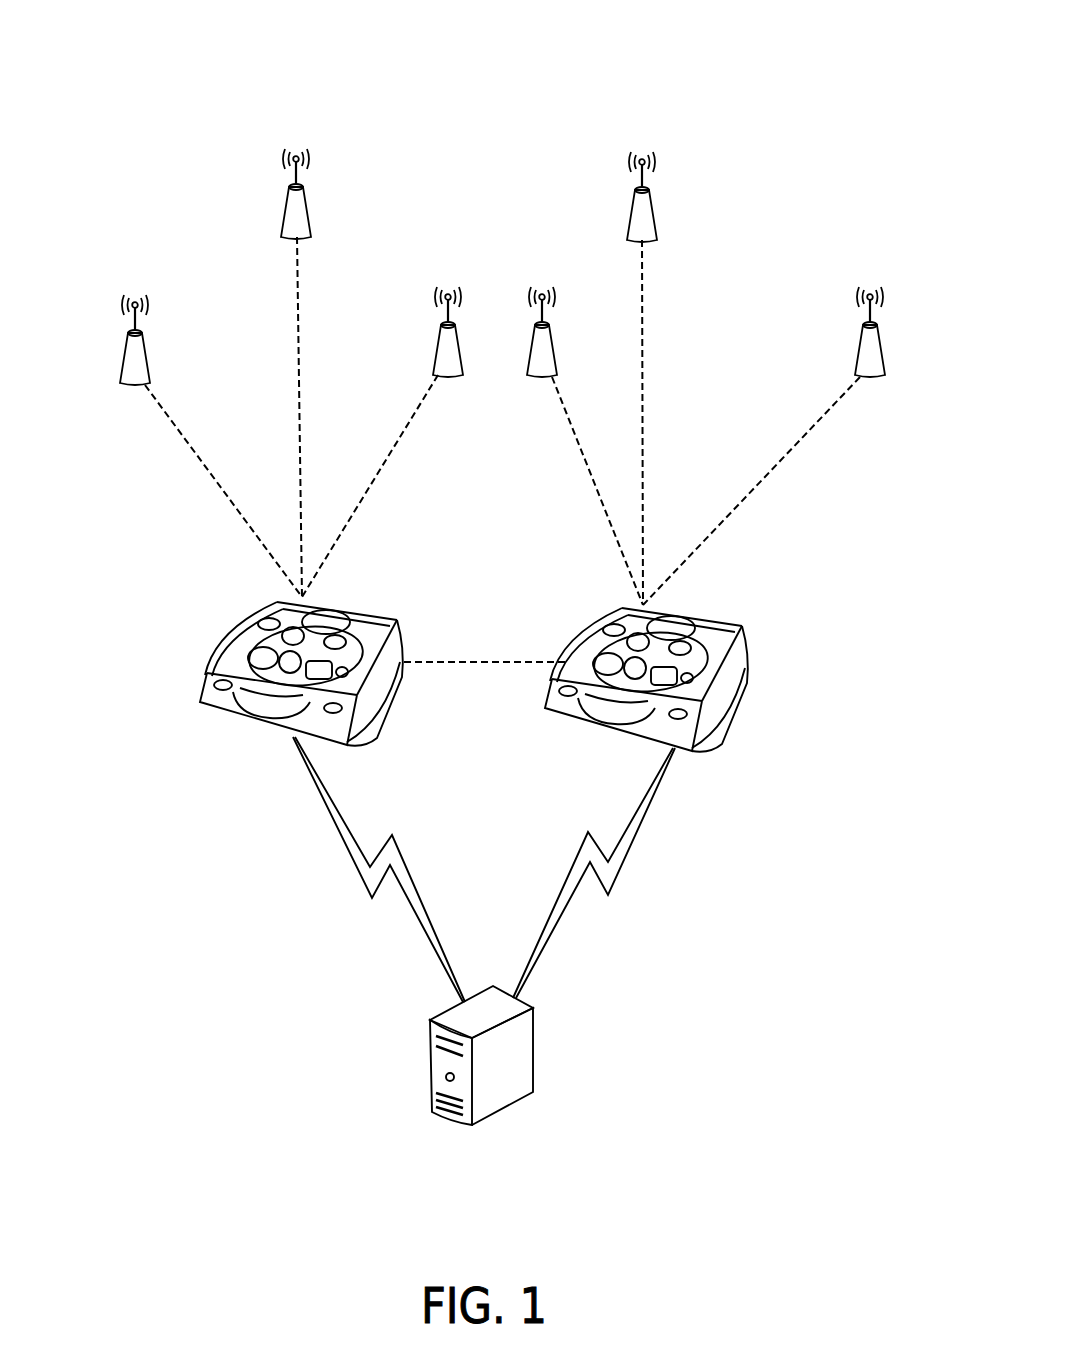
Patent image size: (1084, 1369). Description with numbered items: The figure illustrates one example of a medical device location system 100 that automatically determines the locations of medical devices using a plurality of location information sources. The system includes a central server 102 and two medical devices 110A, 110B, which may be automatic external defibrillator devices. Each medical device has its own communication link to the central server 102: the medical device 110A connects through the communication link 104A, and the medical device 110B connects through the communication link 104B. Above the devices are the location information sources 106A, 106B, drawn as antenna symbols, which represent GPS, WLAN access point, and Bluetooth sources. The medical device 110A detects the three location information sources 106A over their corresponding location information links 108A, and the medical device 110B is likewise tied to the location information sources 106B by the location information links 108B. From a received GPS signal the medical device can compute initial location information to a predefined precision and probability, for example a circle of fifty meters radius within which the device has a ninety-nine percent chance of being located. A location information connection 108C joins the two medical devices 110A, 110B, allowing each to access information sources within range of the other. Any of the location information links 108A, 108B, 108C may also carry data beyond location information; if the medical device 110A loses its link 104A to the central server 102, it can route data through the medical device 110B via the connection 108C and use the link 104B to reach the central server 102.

The medical device location system 100 is at (808, 88).
The central server 102 is at (555, 1033).
The communication link 104A is at (348, 860).
The communication link 104B is at (628, 866).
The location information sources 106A is at (112, 335).
The location information sources 106B is at (542, 277).
The location information links 108A is at (176, 428).
The location information links 108B is at (569, 422).
The location information connection 108C is at (483, 660).
The medical device 110A is at (193, 667).
The medical device 110B is at (770, 680).